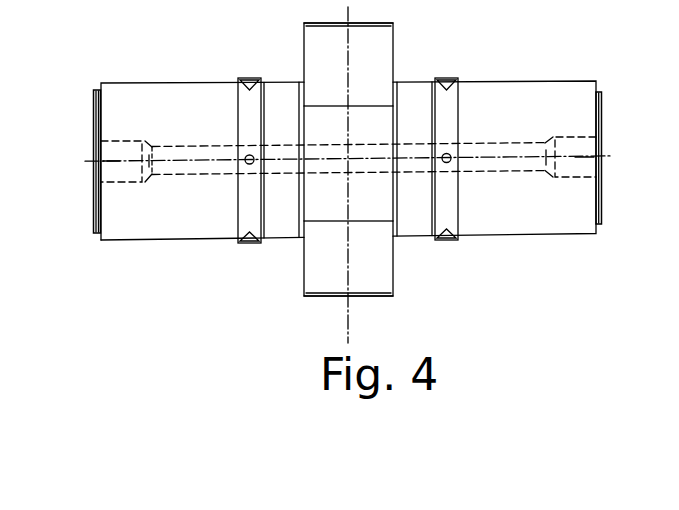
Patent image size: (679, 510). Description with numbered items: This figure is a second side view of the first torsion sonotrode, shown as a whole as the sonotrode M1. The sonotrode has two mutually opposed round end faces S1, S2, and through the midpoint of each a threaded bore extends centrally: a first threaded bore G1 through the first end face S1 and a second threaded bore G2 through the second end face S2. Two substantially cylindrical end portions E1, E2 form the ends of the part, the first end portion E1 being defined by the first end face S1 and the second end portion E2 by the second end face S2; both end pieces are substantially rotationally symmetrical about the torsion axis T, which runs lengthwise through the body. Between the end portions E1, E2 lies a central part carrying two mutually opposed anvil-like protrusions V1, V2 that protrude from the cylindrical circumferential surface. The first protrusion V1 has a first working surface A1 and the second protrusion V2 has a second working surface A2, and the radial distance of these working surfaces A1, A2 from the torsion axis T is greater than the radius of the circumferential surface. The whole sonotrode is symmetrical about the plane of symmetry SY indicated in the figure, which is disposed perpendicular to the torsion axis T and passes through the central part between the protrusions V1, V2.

The module / assembly M1 is at (283, 269).
The first end portion E1 is at (532, 97).
The second end portion E2 is at (158, 100).
The first protrusion V1 is at (324, 58).
The second protrusion V2 is at (393, 247).
The first working surface A1 is at (393, 23).
The second working surface A2 is at (394, 296).
The first end face S1 is at (602, 215).
The second end face S2 is at (92, 110).
The first threaded bore G1 is at (598, 153).
The second threaded bore G2 is at (97, 175).
The torsion axis T is at (162, 160).
The plane of symmetry SY is at (348, 178).